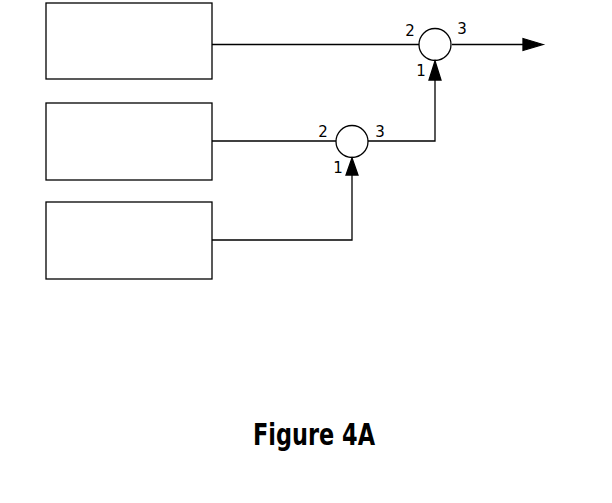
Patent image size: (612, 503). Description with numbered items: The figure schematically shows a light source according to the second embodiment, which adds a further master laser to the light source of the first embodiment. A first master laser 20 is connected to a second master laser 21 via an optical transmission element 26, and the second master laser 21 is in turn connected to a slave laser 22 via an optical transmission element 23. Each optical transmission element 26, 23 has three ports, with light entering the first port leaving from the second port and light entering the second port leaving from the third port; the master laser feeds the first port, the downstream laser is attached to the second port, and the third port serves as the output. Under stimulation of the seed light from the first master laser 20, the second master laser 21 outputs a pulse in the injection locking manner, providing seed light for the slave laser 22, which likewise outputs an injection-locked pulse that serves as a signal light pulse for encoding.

The first master laser 20 is at (129, 240).
The second master laser 21 is at (129, 141).
The slave laser 22 is at (129, 41).
The optical transmission element 23 is at (435, 45).
The optical transmission element 26 is at (352, 142).